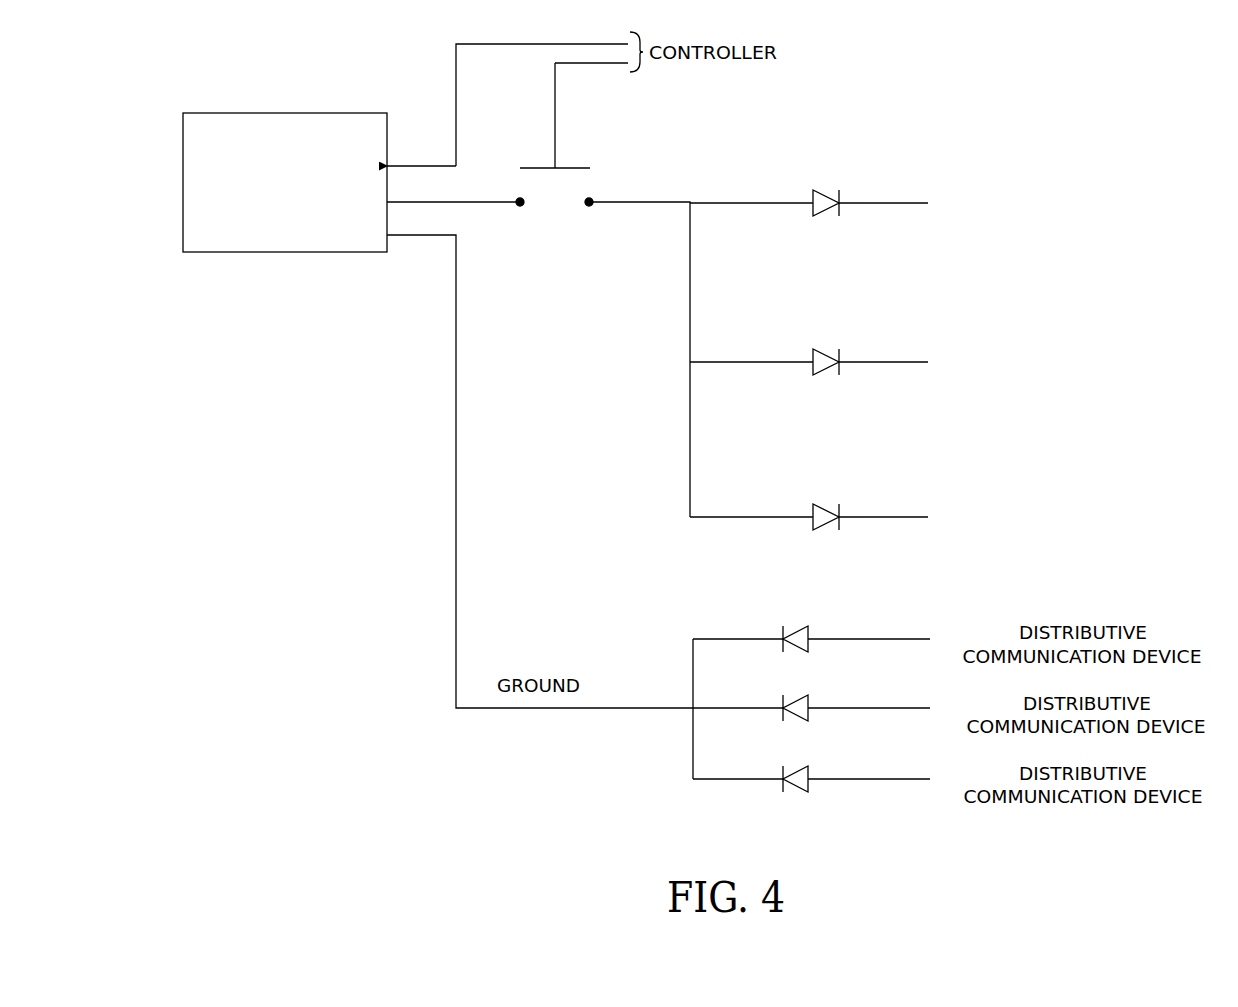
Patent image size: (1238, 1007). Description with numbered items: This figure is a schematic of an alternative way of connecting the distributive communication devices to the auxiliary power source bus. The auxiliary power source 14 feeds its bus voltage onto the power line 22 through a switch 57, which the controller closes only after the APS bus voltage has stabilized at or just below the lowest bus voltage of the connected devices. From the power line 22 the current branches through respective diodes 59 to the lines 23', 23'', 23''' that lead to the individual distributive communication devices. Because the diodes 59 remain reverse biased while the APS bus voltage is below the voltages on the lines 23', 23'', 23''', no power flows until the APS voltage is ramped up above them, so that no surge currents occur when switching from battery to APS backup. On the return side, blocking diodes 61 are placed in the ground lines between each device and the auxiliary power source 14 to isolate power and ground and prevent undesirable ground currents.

The auxiliary power source 14 is at (287, 113).
The switch 57 is at (584, 134).
The power line 22 is at (645, 214).
The diodes 59 is at (817, 181).
The blocking diodes 61 is at (797, 615).
The line 23' is at (1012, 218).
The line 23'' is at (1001, 379).
The line 23''' is at (997, 534).